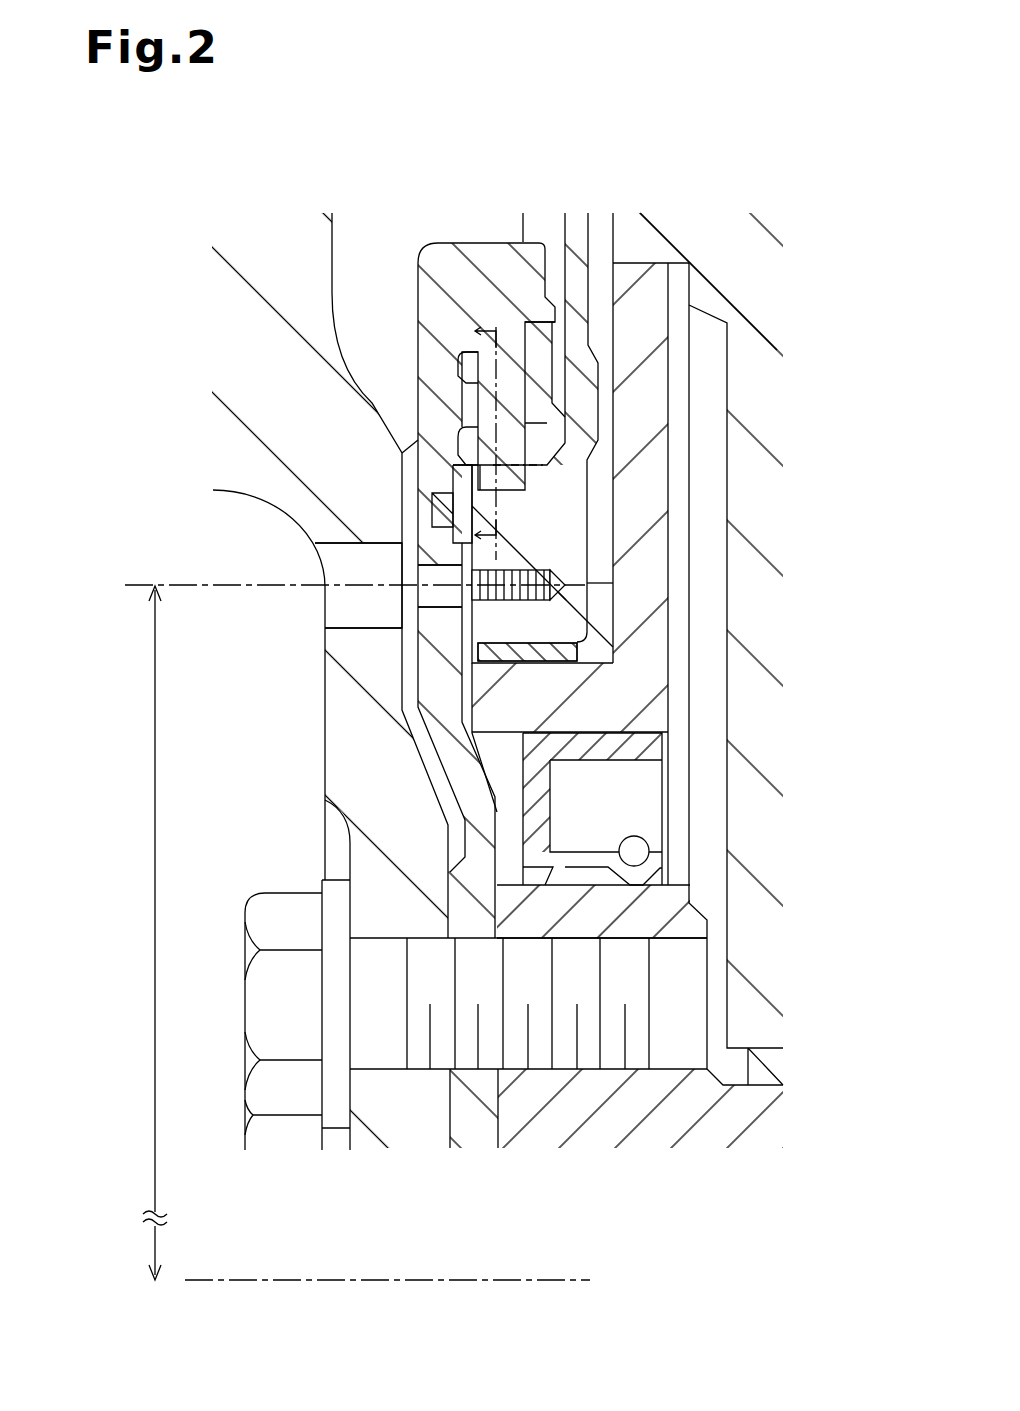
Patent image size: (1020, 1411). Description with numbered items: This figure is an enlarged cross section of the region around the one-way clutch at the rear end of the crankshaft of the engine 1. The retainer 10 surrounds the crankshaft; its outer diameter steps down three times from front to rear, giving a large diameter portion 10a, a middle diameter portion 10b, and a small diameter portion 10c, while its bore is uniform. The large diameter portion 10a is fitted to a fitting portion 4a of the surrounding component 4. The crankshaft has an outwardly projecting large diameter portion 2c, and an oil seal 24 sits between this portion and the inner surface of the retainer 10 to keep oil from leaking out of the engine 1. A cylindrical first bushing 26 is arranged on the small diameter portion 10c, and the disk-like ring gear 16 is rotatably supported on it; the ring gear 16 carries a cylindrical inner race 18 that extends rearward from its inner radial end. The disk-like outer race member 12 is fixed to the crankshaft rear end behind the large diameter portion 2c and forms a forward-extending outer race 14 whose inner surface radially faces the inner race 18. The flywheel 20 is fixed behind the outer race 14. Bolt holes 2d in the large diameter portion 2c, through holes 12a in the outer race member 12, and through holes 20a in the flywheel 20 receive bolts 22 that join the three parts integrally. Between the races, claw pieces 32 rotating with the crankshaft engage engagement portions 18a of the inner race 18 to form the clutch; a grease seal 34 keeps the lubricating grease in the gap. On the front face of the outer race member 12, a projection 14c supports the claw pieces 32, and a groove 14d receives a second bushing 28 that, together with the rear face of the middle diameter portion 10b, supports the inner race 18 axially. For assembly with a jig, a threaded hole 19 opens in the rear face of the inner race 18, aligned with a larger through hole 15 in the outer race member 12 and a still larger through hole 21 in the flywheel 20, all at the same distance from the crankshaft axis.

The engine 1 is at (239, 140).
The large diameter portion 2c is at (688, 893).
The bolt holes 2d is at (568, 1071).
The housing 4 is at (698, 611).
The fitting portion 4a is at (659, 233).
The retainer 10 is at (663, 649).
The large diameter portion 10a is at (658, 393).
The middle diameter portion 10b is at (670, 573).
The small diameter portion 10c is at (697, 580).
The outer race member 12 is at (440, 736).
The through holes 12a is at (470, 1071).
The outer race 14 is at (449, 404).
The projection 14c is at (445, 439).
The groove 14d is at (455, 537).
The through hole 15 is at (433, 603).
The ring gear 16 is at (577, 232).
The inner race 18 is at (542, 583).
The engagement portions 18a is at (508, 488).
The threaded hole 19 is at (503, 592).
The flywheel 20 is at (236, 488).
The through holes 20a is at (385, 1071).
The through hole 21 is at (338, 622).
The bolts 22 is at (258, 1003).
The oil seal 24 is at (652, 748).
The first bushing 26 is at (504, 662).
The second bushing 28 is at (437, 508).
The claw pieces 32 is at (481, 400).
The grease seal 34 is at (534, 320).